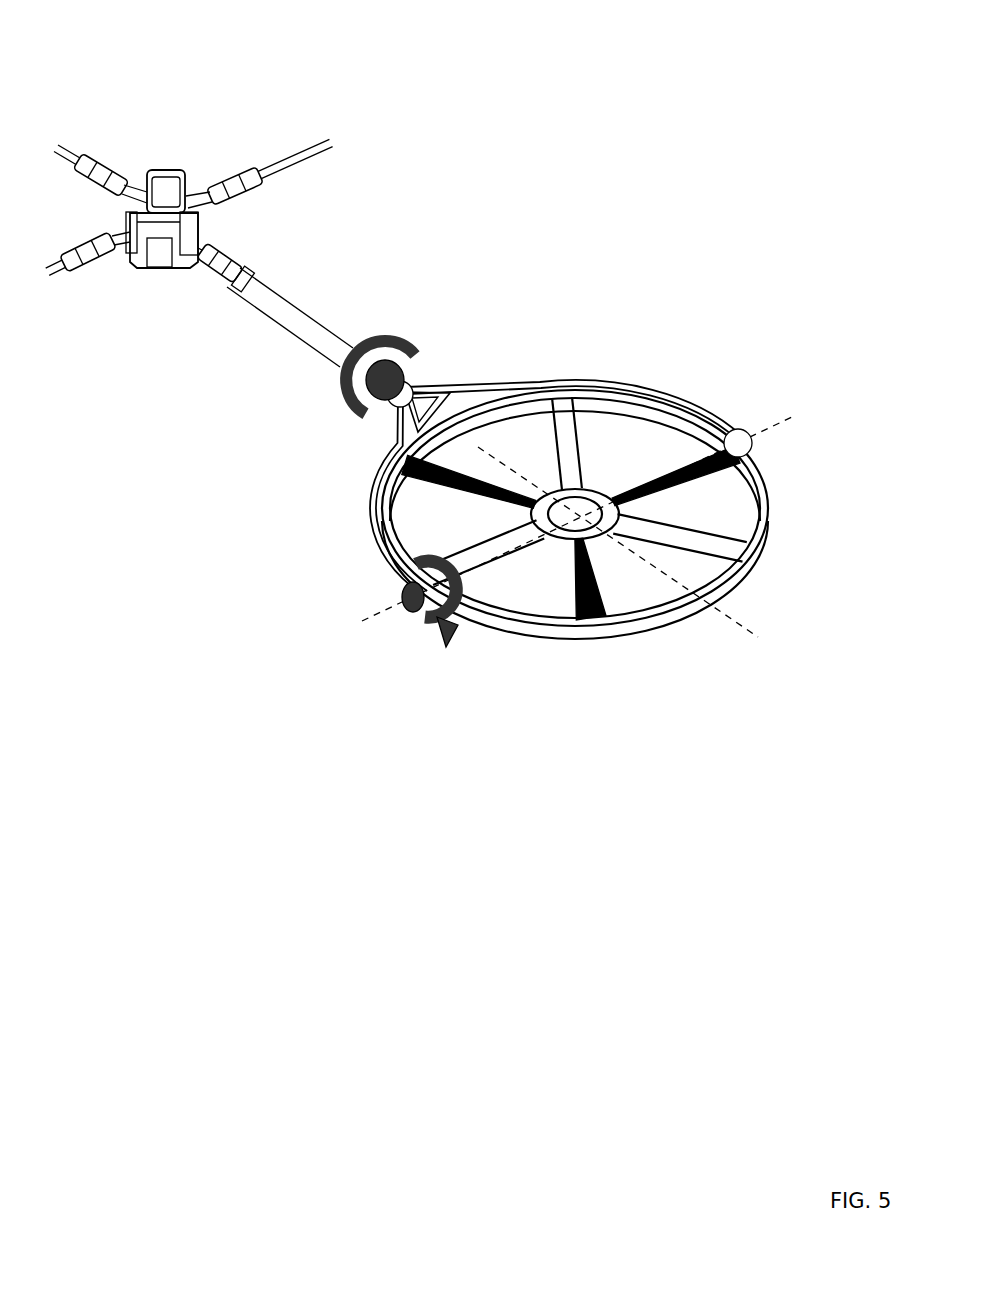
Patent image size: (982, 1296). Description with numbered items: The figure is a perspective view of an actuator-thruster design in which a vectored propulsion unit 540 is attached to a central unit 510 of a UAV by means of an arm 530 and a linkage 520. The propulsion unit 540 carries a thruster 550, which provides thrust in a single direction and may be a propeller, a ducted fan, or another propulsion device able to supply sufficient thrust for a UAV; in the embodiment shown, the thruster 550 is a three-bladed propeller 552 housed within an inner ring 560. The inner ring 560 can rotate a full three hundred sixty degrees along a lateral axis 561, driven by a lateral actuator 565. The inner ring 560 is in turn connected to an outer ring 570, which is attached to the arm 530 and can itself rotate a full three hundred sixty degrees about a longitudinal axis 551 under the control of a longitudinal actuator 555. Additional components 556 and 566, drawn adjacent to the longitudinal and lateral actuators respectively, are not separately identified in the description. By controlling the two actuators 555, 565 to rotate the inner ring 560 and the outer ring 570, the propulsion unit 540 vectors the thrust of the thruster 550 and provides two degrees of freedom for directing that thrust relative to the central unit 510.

The central unit 510 is at (163, 118).
The linkage 520 is at (190, 278).
The arm 530 is at (260, 292).
The vectored propulsion unit 540 is at (635, 260).
The thruster 550 is at (718, 508).
The longitudinal axis 551 is at (746, 643).
The three-bladed propeller 552 is at (730, 470).
The longitudinal actuator 555 is at (403, 360).
The bearing 556 is at (398, 343).
The inner ring 560 is at (758, 555).
The lateral axis 561 is at (363, 640).
The lateral actuator 565 is at (737, 430).
The bearing clamp 566 is at (445, 643).
The outer ring 570 is at (376, 525).